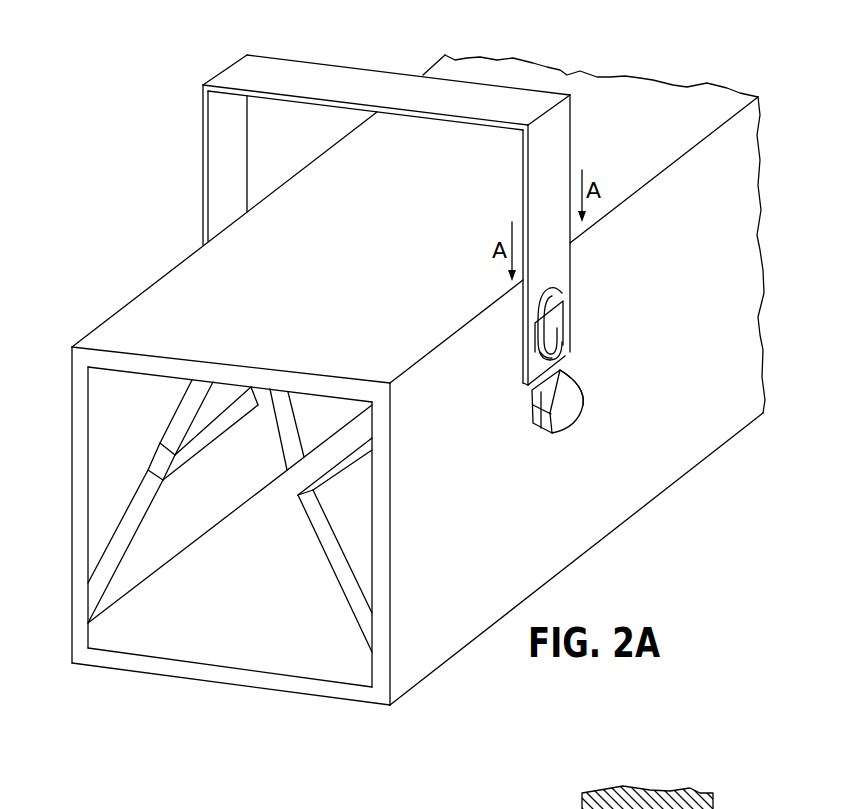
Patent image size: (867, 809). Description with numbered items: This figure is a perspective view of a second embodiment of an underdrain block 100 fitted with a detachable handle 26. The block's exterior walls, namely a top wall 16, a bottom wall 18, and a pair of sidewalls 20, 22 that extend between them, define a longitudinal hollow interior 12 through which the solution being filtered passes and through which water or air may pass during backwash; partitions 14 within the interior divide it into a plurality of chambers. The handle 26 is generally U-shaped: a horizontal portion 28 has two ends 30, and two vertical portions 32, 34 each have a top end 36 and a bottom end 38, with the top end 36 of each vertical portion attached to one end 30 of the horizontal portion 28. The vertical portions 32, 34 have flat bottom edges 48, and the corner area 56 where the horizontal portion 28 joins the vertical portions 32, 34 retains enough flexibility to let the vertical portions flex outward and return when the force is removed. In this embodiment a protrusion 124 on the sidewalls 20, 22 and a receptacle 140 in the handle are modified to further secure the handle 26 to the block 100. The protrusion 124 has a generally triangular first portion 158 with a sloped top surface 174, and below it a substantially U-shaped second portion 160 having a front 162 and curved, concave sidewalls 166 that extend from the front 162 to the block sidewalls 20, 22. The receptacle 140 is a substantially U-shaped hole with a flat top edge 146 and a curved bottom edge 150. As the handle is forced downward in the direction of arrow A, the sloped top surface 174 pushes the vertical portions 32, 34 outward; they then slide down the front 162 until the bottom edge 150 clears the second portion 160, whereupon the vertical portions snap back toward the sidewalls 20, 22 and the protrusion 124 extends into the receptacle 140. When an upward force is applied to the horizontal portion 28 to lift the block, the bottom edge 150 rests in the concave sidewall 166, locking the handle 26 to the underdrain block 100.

The underdrain block 100 is at (113, 103).
The longitudinal hollow interior 12 is at (230, 514).
The partitions 14 is at (122, 537).
The top wall 16 is at (289, 383).
The bottom wall 18 is at (221, 677).
The sidewall 20 is at (387, 542).
The sidewall 22 is at (78, 515).
The detachable handle 26 is at (494, 200).
The horizontal portion 28 is at (358, 86).
The ends 30 is at (247, 65).
The vertical portion 32 is at (550, 163).
The vertical portion 34 is at (223, 187).
The top end 36 is at (217, 135).
The bottom end 38 is at (570, 289).
The bottom edges 48 is at (563, 358).
The corner area 56 is at (207, 93).
The protrusion 124 is at (578, 414).
The receptacle 140 is at (556, 323).
The flat top edge 146 is at (563, 293).
The curved bottom edge 150 is at (545, 347).
The first portion 158 is at (522, 396).
The second portion 160 is at (574, 433).
The front 162 is at (577, 411).
The sidewalls 166 is at (538, 432).
The sloped top surface 174 is at (562, 372).